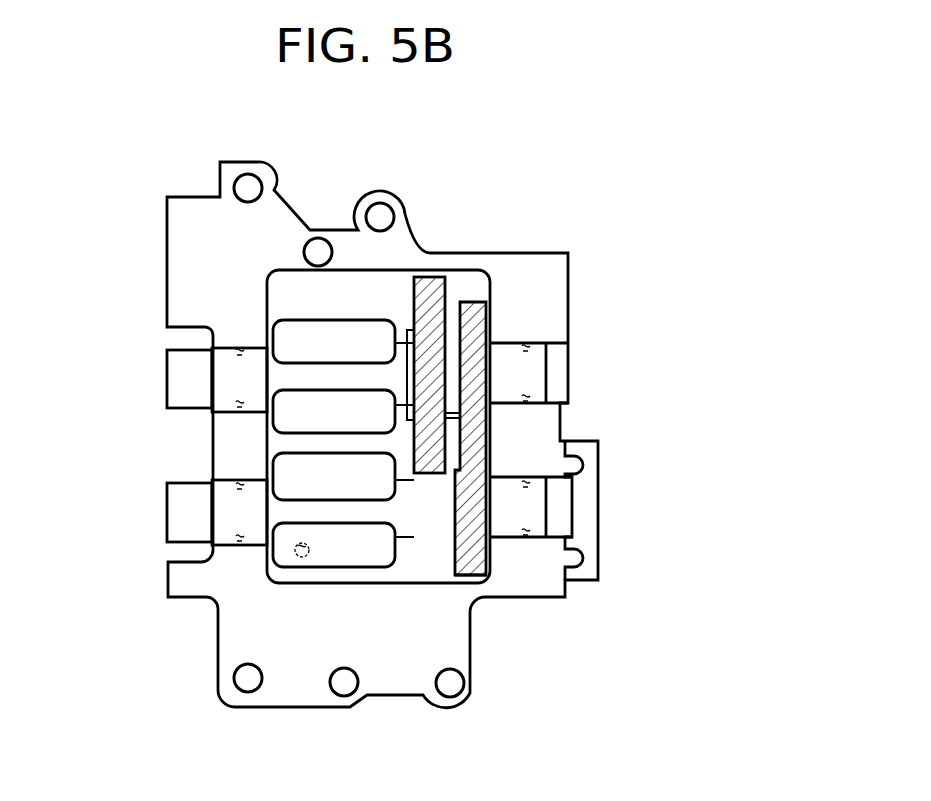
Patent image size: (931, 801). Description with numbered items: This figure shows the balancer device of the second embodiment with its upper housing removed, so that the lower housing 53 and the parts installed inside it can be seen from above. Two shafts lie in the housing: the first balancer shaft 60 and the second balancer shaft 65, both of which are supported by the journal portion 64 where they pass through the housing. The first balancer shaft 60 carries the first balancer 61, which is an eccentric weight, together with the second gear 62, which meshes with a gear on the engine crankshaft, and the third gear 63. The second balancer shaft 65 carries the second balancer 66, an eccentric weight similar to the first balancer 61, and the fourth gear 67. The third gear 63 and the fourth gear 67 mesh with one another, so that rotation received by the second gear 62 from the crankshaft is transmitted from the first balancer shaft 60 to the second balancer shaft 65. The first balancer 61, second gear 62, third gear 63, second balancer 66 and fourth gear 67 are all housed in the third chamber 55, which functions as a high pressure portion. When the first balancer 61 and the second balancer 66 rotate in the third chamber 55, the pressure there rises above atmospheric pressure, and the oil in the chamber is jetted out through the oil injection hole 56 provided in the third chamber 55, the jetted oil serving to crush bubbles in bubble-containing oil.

The lower housing 53 is at (217, 665).
The third chamber 55 is at (370, 275).
The oil injection hole 56 is at (288, 552).
The first balancer shaft 60 is at (240, 328).
The first balancer 61 is at (307, 318).
The second gear 62 is at (448, 292).
The third gear 63 is at (472, 300).
The journal portion 64 is at (213, 346).
The second balancer shaft 65 is at (235, 554).
The second balancer 66 is at (335, 567).
The fourth gear 67 is at (455, 577).